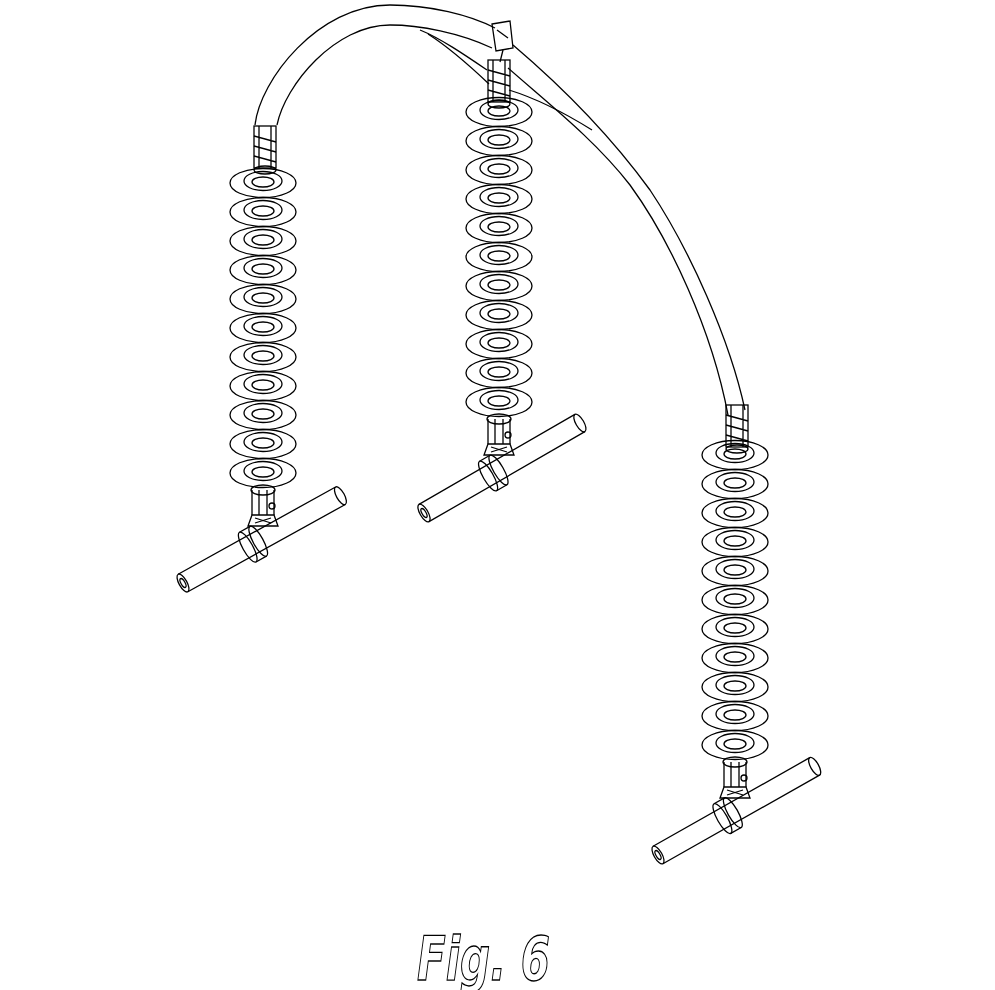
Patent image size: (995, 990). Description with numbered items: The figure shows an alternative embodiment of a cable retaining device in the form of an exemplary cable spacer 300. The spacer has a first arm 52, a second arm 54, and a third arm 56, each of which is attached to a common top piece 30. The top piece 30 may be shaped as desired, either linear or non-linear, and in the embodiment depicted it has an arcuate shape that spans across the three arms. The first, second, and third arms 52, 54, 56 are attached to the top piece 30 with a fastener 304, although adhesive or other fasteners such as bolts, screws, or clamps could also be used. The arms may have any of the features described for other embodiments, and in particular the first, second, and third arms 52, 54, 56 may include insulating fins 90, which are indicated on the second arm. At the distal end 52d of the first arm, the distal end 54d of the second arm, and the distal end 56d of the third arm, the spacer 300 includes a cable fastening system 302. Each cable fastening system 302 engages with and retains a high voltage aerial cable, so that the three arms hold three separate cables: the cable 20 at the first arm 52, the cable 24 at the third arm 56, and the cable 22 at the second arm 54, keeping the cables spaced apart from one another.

The cable spacer 300 is at (136, 118).
The top piece 30 is at (620, 158).
The fastener 304 is at (256, 138).
The cable fastening system 302 is at (236, 518).
The first arm 52 is at (224, 328).
The distal end of first arm 52d is at (248, 472).
The third arm 56 is at (459, 257).
The distal end of third arm 56d is at (481, 400).
The second arm 54 is at (741, 593).
The distal end of second arm 54d is at (724, 742).
The insulating fins 90 is at (763, 513).
The high voltage aerial cable 20 is at (210, 572).
The high voltage aerial cable 24 is at (440, 503).
The high voltage aerial cable 22 is at (685, 838).